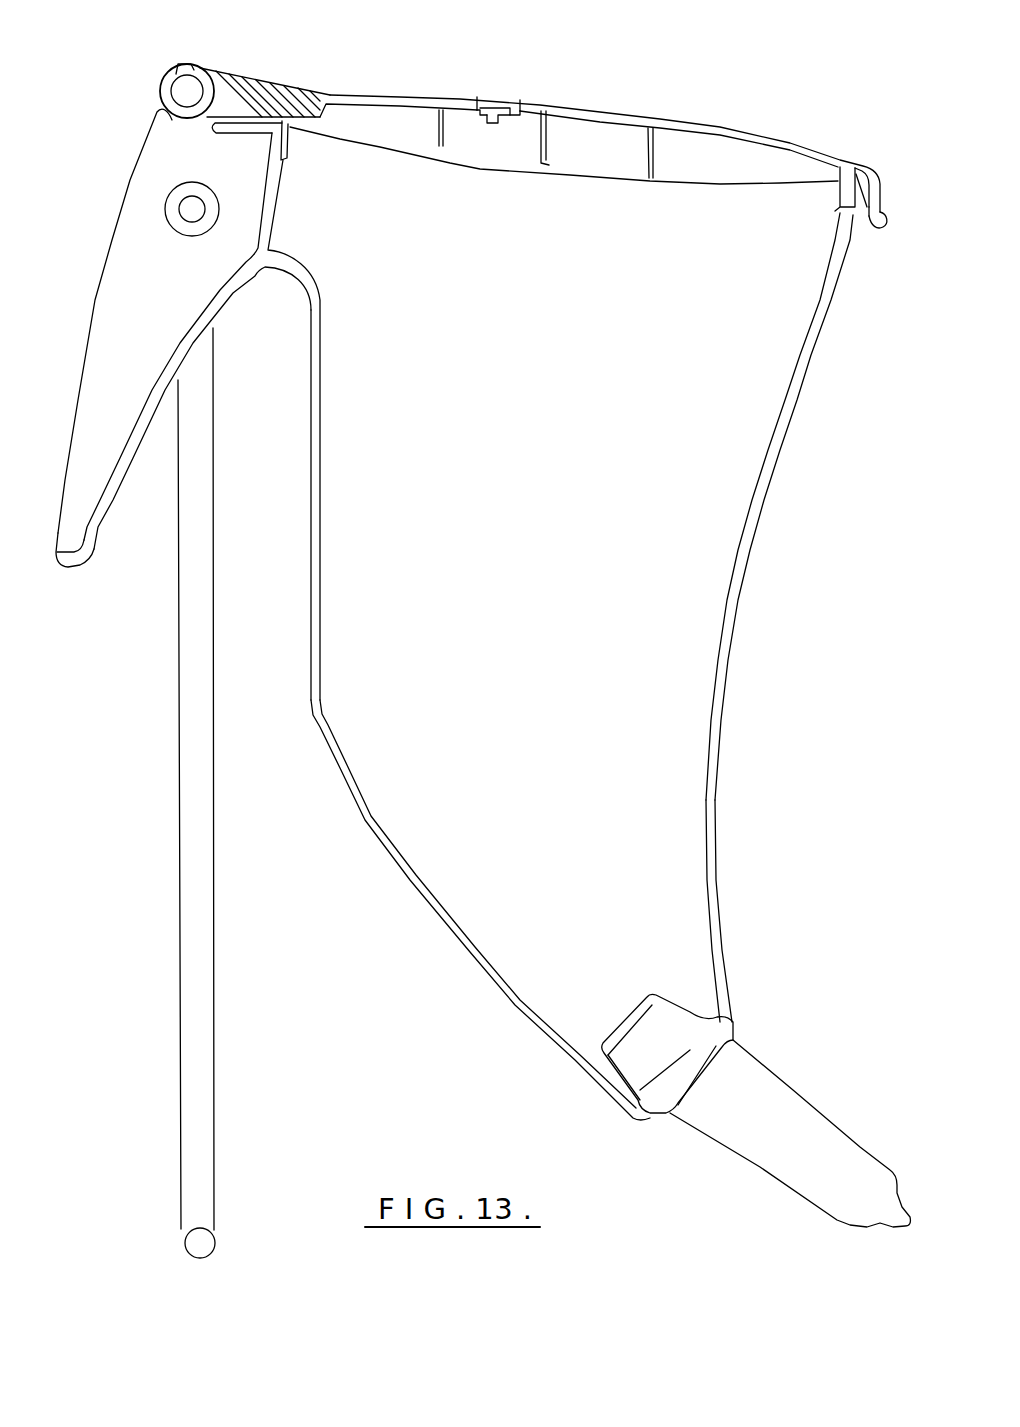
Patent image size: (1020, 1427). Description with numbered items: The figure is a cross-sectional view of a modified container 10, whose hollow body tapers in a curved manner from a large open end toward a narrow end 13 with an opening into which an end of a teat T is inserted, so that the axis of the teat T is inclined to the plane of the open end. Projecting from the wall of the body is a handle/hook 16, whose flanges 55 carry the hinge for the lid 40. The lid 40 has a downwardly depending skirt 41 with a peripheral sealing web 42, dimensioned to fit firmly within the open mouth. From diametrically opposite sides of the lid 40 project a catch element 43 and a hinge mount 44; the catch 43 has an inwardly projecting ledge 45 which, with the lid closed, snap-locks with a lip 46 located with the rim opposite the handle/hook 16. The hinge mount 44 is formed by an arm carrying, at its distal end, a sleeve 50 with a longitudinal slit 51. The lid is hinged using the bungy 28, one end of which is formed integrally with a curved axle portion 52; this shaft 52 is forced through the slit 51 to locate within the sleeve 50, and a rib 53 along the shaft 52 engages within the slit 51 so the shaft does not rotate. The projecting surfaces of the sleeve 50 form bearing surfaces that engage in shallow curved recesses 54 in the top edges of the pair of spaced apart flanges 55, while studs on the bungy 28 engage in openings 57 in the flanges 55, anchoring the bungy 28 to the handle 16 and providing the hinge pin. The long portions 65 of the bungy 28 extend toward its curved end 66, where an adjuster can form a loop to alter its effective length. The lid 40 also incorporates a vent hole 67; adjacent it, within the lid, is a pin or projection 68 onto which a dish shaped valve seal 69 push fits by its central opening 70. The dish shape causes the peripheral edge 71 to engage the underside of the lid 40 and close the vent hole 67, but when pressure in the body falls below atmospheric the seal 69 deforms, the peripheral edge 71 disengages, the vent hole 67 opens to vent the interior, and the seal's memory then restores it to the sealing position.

The container 10 is at (729, 631).
The narrow end 13 is at (736, 968).
The handle/hook 16 is at (108, 530).
The bungy 28 is at (165, 737).
The lid 40 is at (680, 97).
The skirt 41 is at (289, 143).
The peripheral sealing web 42 is at (282, 162).
The catch element 43 is at (882, 208).
The hinge mount 44 is at (280, 79).
The inwardly projecting ledge 45 is at (865, 224).
The lip 46 is at (836, 198).
The sleeve 50 is at (115, 293).
The longitudinal slit 51 is at (174, 66).
The curved axle portion 52 is at (190, 88).
The rib 53 is at (181, 64).
The shallow curved recess 54 is at (170, 122).
The flange 55 is at (193, 286).
The opening 57 is at (190, 209).
The long portion 65 is at (203, 931).
The curved end 66 is at (185, 1236).
The vent hole 67 is at (477, 97).
The pin or projection 68 is at (491, 124).
The dish shaped valve seal 69 is at (518, 119).
The central opening 70 is at (478, 116).
The peripheral edge 71 is at (521, 100).
The teat T is at (782, 1070).